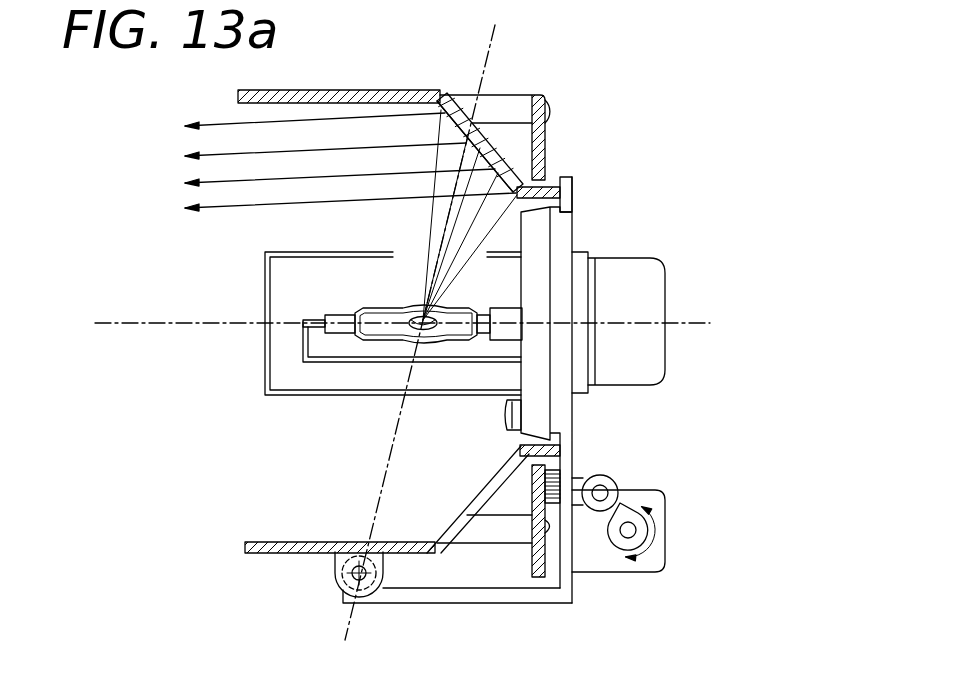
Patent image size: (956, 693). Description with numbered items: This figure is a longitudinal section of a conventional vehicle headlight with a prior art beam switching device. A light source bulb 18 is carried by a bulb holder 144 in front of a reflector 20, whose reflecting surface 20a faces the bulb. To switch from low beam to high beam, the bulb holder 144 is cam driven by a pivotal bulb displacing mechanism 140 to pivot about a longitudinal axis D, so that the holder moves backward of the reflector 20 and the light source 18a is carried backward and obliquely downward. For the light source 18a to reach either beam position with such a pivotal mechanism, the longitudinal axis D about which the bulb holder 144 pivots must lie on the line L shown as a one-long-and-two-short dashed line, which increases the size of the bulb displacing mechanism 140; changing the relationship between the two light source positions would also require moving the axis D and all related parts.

The reflector 20 is at (468, 104).
The reflecting surface 20a is at (452, 134).
The light source bulb 18 is at (363, 305).
The light source 18a is at (419, 310).
The bulb holder 144 is at (578, 232).
The bulb displacing mechanism 140 is at (648, 470).
The line L is at (380, 470).
The longitudinal axis D is at (336, 590).